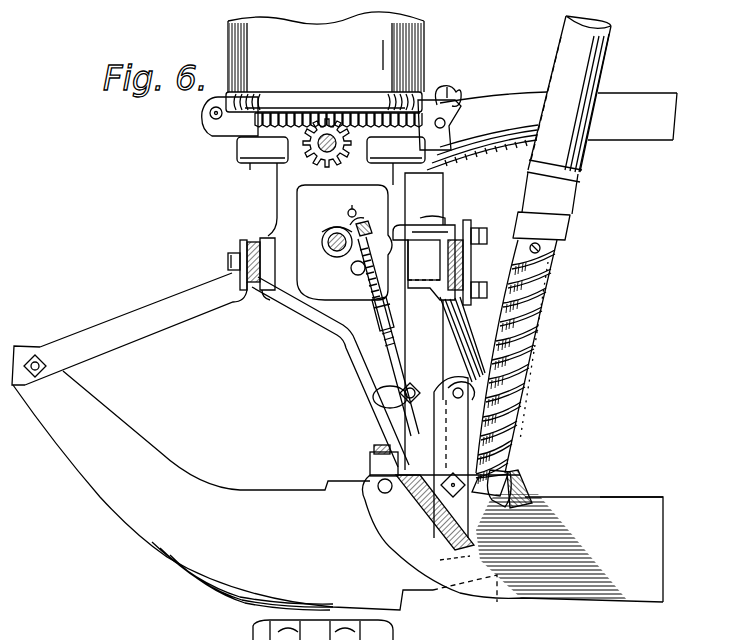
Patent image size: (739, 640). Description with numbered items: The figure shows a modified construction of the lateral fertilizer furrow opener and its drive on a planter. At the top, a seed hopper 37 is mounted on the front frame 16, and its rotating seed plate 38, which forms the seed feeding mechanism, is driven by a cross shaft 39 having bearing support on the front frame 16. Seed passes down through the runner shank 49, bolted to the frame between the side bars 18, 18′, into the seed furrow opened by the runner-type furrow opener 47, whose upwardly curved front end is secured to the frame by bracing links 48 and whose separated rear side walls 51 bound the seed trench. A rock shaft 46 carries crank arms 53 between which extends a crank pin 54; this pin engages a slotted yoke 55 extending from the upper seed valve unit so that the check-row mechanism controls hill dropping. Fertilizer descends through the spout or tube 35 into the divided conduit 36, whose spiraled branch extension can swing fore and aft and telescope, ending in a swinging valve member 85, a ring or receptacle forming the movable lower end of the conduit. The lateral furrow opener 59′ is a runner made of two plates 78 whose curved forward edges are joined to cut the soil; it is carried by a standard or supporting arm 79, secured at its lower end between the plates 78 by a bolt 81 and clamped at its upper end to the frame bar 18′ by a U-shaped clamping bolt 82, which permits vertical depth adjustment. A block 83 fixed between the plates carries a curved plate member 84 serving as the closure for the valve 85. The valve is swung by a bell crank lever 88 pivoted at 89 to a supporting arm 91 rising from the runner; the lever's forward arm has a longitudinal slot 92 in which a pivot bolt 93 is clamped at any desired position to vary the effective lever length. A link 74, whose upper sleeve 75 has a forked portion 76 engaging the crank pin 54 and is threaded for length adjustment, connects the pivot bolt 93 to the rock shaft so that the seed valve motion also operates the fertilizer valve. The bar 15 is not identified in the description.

The frame bar 15 is at (695, 138).
The front frame 16 is at (242, 231).
The side bar 18 is at (228, 262).
The frame bar 18′ is at (460, 272).
The spout or tube 35 is at (606, 74).
The divided duct or conduit 36 is at (581, 172).
The seed hopper 37 is at (425, 65).
The rotating seed plate 38 is at (320, 115).
The cross shaft 39 is at (300, 150).
The rock shaft 46 is at (329, 245).
The furrow opener 47 is at (152, 538).
The bracing links 48 is at (115, 303).
The runner shank 49 is at (347, 338).
The side walls 51 is at (495, 588).
The crank arms 53 is at (348, 235).
The crank pin 54 is at (362, 225).
The slotted yoke 55 is at (388, 228).
The lateral furrow opener 59′ is at (616, 486).
The link 74 is at (397, 333).
The sleeve 75 is at (352, 263).
The forked portion 76 is at (348, 215).
The plates 78 is at (660, 505).
The standard or supporting arm 79 is at (417, 348).
The bolt 81 is at (450, 500).
The U-shaped clamping bolt 82 is at (418, 232).
The block 83 is at (473, 527).
The curved arm or plate member 84 is at (520, 512).
The swinging valve 85 is at (510, 487).
The bell crank lever 88 is at (484, 417).
The pivot 89 is at (484, 373).
The supporting arm 91 is at (403, 437).
The longitudinal slot 92 is at (395, 400).
The pivot bolt 93 is at (380, 394).